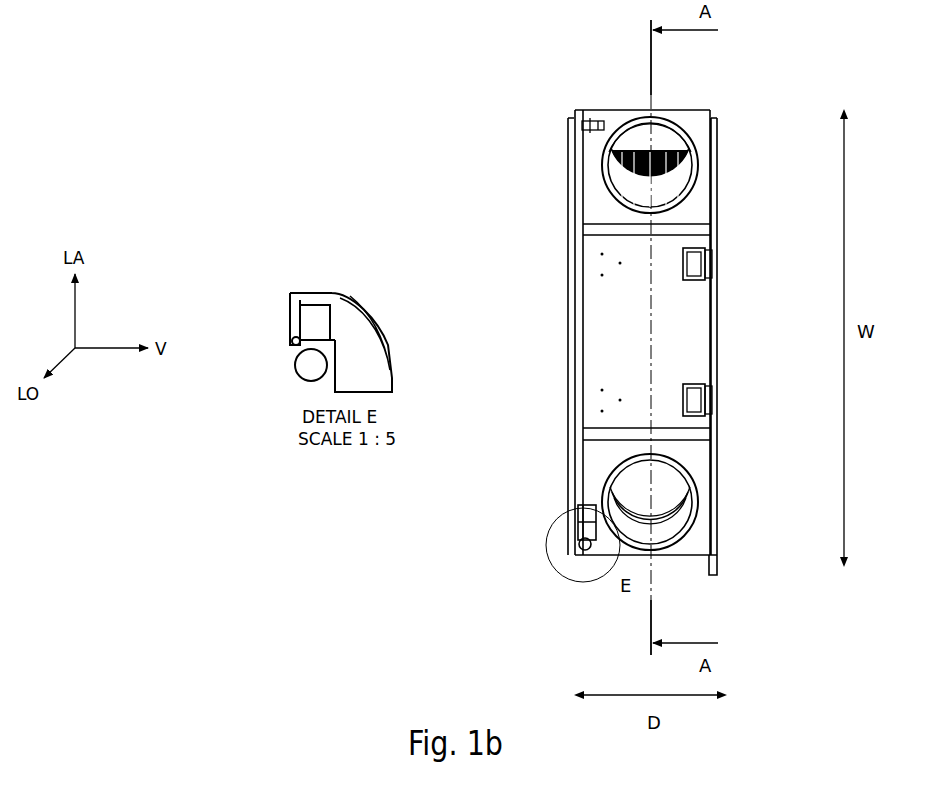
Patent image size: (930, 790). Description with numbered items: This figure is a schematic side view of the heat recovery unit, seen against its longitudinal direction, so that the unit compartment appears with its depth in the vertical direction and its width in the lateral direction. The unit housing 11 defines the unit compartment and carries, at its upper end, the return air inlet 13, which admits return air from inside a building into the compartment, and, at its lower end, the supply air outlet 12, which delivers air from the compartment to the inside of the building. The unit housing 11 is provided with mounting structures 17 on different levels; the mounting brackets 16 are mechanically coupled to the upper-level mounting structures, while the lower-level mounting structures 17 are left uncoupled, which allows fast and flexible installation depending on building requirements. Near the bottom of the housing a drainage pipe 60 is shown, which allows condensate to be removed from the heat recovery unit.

The unit housing 11 is at (685, 352).
The supply air outlet 12 is at (695, 525).
The return air inlet 13 is at (672, 127).
The mounting bracket 16 is at (710, 254).
The mounting structure 17 is at (600, 275).
The drainage pipe 60 is at (582, 548).